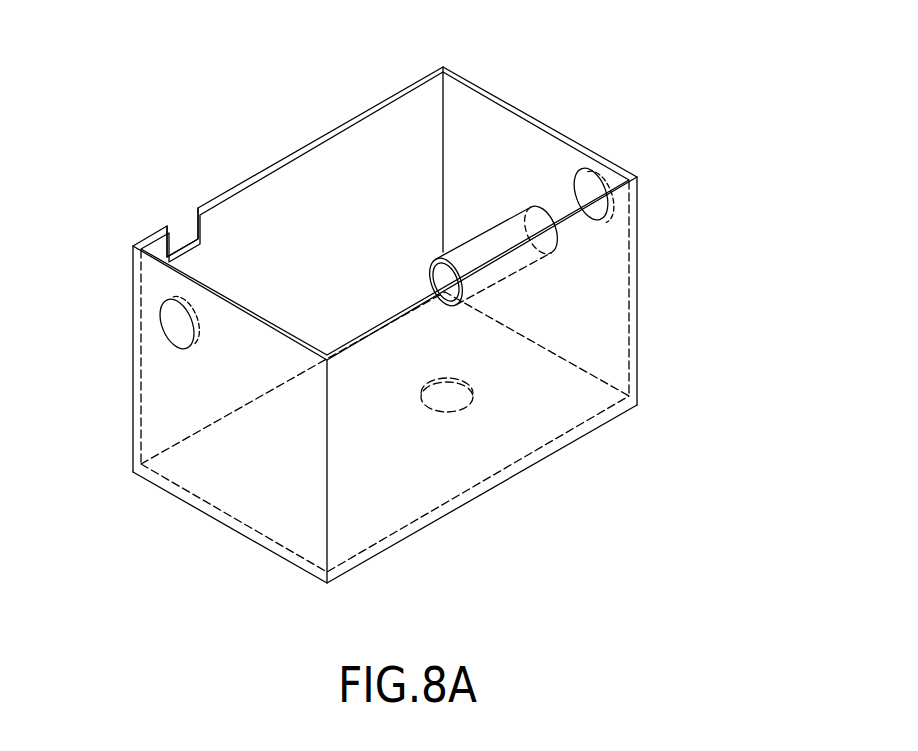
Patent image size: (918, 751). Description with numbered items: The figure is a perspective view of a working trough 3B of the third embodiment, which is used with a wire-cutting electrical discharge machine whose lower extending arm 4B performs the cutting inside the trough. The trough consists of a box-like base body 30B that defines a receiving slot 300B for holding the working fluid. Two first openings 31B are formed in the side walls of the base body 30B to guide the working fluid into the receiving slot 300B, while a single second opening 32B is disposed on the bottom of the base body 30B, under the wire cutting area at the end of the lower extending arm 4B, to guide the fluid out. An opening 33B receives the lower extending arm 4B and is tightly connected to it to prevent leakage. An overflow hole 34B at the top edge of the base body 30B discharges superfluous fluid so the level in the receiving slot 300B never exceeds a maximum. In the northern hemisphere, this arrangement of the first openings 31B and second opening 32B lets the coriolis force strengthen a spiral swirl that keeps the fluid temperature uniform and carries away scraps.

The working trough 3B is at (700, 58).
The base body 30B is at (320, 137).
The receiving slot 300B is at (330, 233).
The lower extending arm 4B is at (488, 243).
The first opening 31B is at (176, 325).
The second opening 32B is at (473, 397).
The opening 33B is at (512, 218).
The overflow hole 34B is at (181, 230).